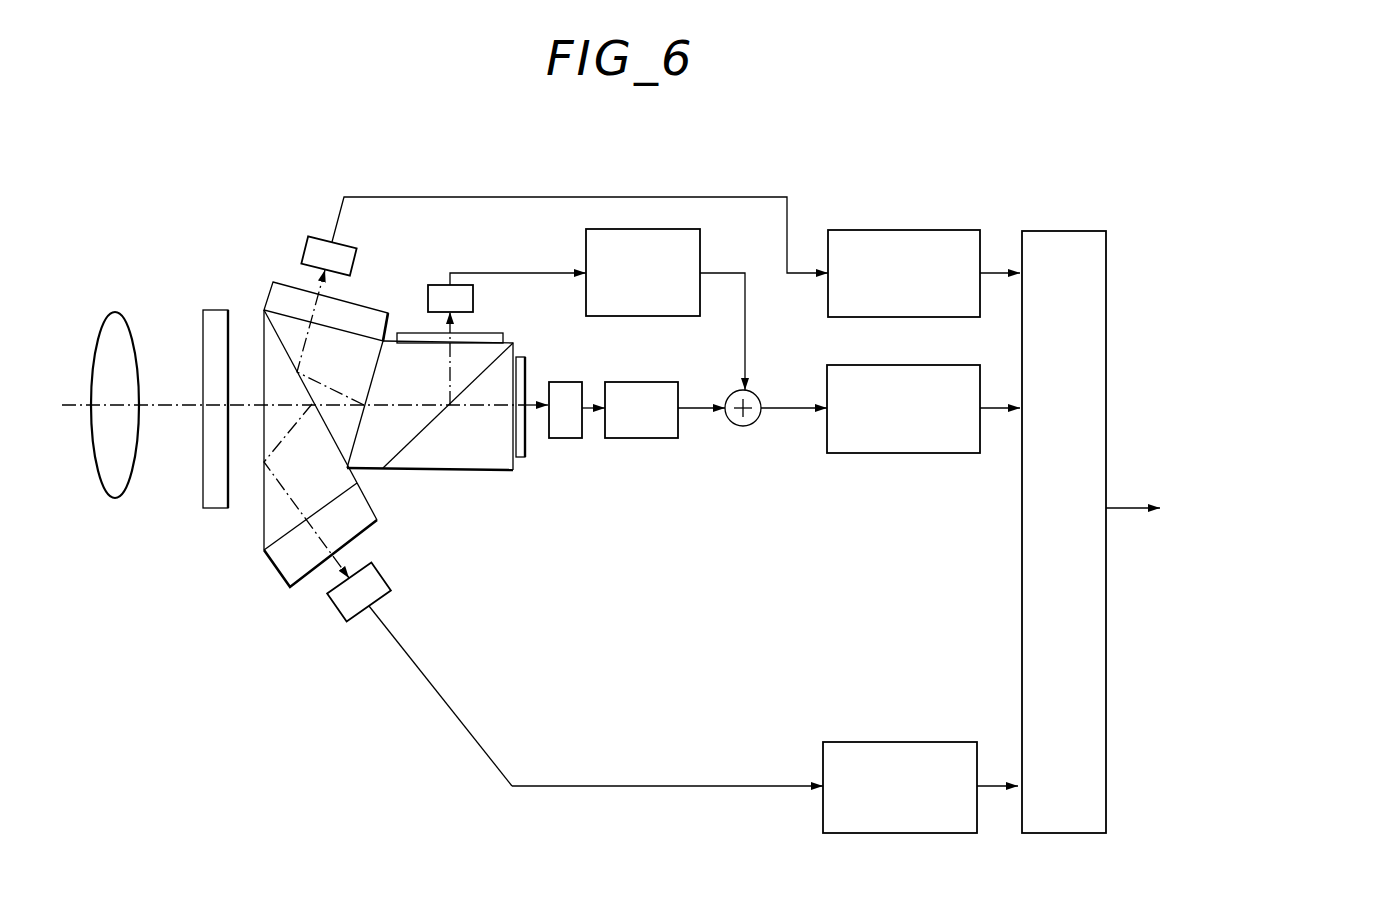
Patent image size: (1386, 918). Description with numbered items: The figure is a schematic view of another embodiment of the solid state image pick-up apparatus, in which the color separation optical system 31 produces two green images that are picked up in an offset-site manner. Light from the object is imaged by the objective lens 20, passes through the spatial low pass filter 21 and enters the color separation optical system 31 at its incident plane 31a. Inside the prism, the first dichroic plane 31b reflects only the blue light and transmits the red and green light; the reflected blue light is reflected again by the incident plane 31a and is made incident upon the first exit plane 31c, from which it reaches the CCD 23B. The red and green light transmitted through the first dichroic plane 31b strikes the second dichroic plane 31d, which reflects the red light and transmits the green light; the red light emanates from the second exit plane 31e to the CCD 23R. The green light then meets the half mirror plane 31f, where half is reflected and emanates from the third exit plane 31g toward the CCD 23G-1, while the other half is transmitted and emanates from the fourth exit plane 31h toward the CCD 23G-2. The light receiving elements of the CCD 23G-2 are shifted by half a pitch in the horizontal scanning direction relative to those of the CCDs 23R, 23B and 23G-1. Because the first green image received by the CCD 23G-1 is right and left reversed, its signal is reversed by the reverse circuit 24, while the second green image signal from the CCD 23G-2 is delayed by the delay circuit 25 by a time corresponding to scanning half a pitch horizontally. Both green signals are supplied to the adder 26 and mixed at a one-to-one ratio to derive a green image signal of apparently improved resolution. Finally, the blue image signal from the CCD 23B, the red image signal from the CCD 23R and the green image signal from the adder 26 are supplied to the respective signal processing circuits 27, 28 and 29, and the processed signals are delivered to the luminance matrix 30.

The objective lens 20 is at (115, 312).
The spatial low pass filter 21 is at (205, 312).
The CCD for red image 23R is at (322, 240).
The CCD for first green image 23G-1 is at (436, 285).
The CCD for second green image 23G-2 is at (568, 382).
The CCD for blue image 23B is at (388, 592).
The reverse circuit 24 is at (586, 245).
The delay circuit 25 is at (642, 382).
The adder 26 is at (743, 426).
The signal processing circuit 27 is at (890, 742).
The signal processing circuit 28 is at (906, 230).
The signal processing circuit 29 is at (912, 453).
The luminance matrix 30 is at (1063, 231).
The color separation optical system 31 is at (262, 572).
The incident plane 31a is at (262, 353).
The first dichroic plane 31b is at (349, 470).
The first exit plane 31c is at (300, 592).
The second dichroic plane 31d is at (364, 345).
The second exit plane 31e is at (286, 281).
The half mirror plane 31f is at (428, 436).
The third exit plane 31g is at (498, 334).
The fourth exit plane 31h is at (523, 458).